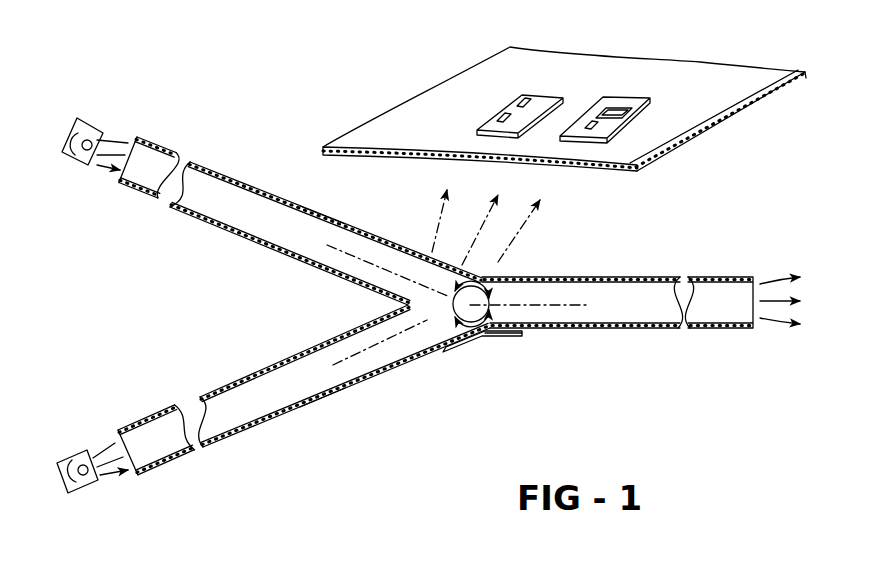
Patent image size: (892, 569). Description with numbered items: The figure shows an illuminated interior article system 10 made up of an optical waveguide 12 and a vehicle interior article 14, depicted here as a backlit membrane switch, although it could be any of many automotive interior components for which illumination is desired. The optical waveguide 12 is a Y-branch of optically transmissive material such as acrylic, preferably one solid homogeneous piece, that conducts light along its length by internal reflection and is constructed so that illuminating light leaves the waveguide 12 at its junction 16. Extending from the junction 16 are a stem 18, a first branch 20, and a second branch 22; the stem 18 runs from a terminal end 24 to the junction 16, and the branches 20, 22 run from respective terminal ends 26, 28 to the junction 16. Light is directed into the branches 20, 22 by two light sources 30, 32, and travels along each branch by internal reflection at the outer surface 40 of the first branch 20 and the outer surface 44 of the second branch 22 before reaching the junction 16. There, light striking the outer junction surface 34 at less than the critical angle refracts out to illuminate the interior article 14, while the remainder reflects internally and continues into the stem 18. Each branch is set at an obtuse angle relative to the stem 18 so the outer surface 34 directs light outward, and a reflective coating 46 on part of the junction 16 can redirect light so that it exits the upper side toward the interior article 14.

The illuminated interior article system 10 is at (295, 68).
The optical waveguide 12 is at (574, 398).
The vehicle interior article 14 is at (627, 127).
The junction 16 is at (480, 348).
The stem 18 is at (637, 277).
The first branch 20 is at (260, 256).
The second branch 22 is at (240, 370).
The terminal end 24 is at (753, 328).
The terminal end 26 is at (137, 137).
The terminal end 28 is at (128, 475).
The light source 30 is at (65, 130).
The light source 32 is at (70, 457).
The outer junction surface 34 is at (493, 272).
The outer surface 40 is at (357, 227).
The outer surface 44 is at (347, 385).
The reflective coating 46 is at (517, 335).